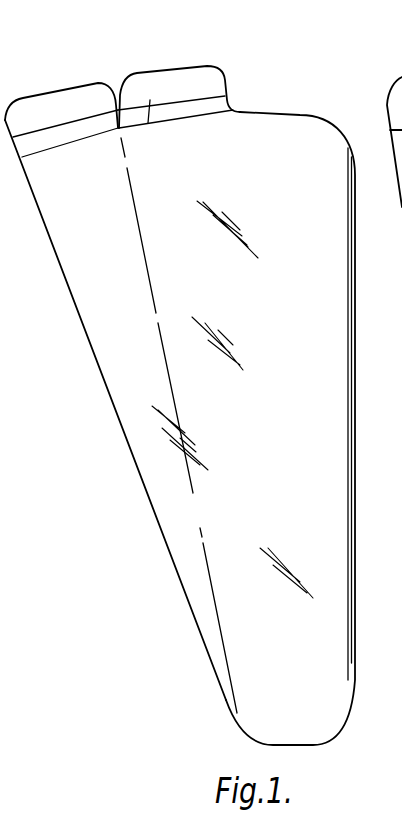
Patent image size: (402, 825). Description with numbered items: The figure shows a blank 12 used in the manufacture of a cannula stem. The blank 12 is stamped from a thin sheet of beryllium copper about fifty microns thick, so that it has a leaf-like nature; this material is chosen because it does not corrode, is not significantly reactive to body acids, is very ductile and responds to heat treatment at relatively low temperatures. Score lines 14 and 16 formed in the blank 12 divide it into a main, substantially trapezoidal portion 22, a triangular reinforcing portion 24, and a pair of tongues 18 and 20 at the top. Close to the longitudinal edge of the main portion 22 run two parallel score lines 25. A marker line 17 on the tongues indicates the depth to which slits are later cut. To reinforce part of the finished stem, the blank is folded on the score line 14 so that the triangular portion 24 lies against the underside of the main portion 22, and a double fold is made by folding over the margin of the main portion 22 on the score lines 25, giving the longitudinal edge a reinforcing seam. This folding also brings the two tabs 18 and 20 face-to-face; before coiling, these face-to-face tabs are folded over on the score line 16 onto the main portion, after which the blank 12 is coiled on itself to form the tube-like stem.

The blank 12 is at (188, 572).
The score line 14 is at (193, 502).
The score line 16 is at (175, 101).
The marker line 17 is at (150, 100).
The tongue 18 is at (57, 98).
The tongue 20 is at (210, 83).
The main portion 22 is at (330, 400).
The triangular reinforcing portion 24 is at (117, 381).
The score lines 25 is at (350, 513).